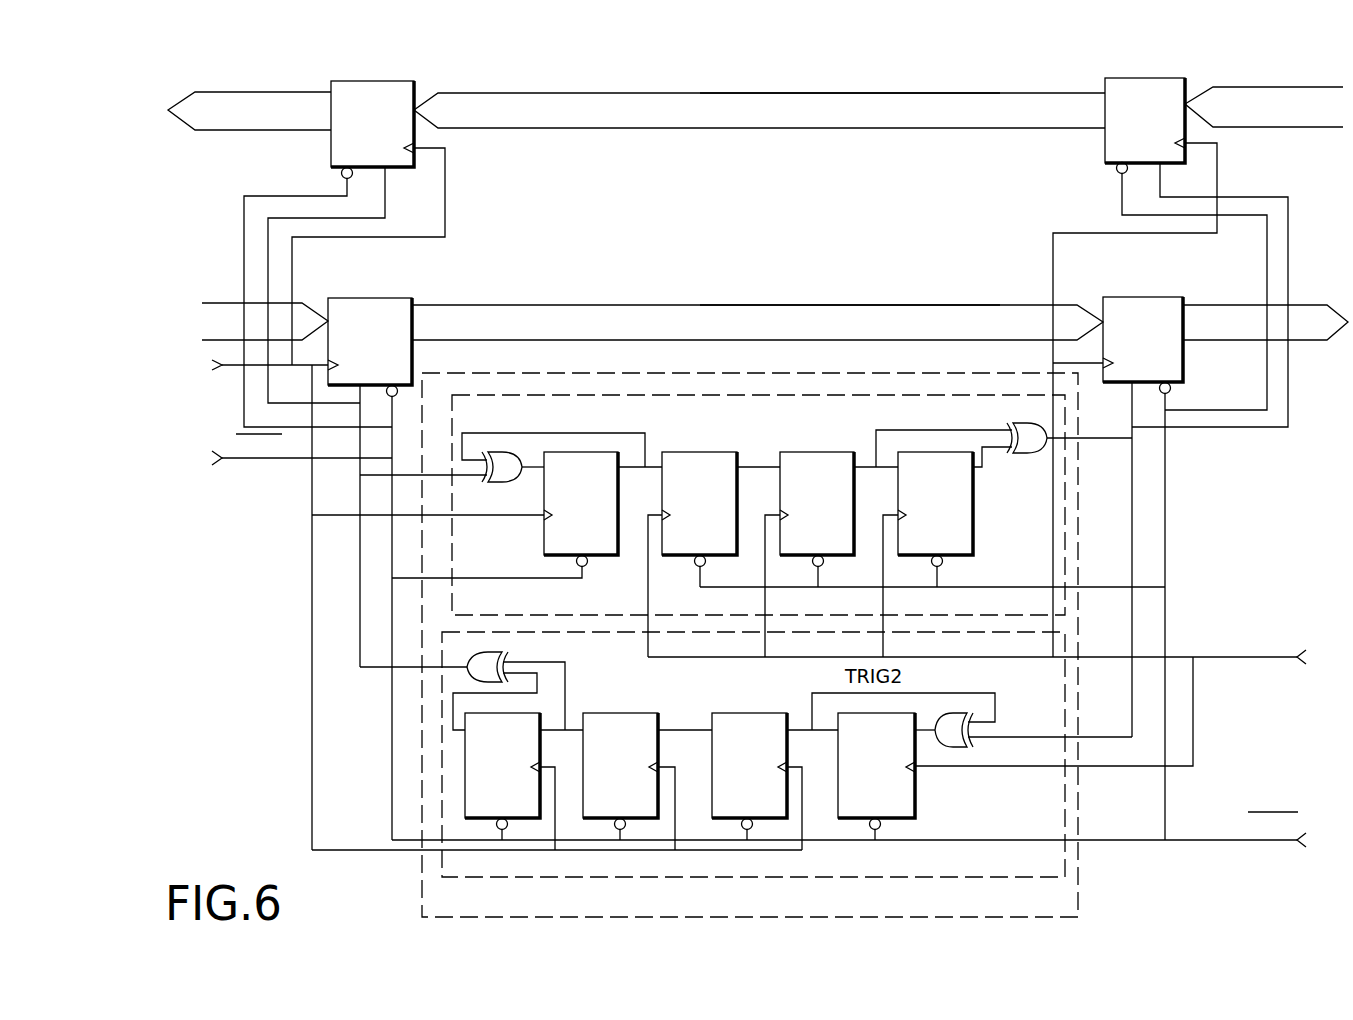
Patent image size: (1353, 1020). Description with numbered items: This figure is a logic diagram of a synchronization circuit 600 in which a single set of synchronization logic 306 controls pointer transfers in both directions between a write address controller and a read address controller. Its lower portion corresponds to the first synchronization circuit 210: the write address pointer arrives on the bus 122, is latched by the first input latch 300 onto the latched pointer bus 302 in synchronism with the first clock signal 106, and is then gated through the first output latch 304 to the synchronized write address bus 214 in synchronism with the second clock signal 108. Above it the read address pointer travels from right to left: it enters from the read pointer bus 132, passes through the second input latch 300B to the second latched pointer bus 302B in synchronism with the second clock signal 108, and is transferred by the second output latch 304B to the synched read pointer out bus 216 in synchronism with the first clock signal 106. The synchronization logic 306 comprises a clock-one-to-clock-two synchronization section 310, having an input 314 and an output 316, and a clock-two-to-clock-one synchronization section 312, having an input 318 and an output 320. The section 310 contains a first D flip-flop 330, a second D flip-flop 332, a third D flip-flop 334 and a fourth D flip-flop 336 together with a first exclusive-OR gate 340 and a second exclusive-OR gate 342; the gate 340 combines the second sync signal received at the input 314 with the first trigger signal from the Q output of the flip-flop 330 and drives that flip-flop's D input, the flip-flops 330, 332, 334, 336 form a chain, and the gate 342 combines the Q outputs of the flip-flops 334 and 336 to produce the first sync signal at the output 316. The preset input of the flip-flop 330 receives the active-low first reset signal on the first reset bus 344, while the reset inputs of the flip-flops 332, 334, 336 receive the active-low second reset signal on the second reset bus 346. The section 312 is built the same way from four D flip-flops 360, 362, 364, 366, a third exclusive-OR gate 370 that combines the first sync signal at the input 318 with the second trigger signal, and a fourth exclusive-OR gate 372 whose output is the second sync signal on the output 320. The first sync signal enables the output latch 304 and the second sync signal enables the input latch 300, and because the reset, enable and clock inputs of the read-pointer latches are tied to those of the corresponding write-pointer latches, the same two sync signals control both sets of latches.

The first clock signal CLOCK1 106 is at (233, 372).
The second clock signal CLOCK2 108 is at (1217, 660).
The bus 122 is at (236, 303).
The read pointer bus 132 is at (1232, 87).
The first synchronization circuit 210 is at (878, 287).
The synchronized write address bus 214 is at (1210, 305).
The synched read pointer out bus 216 is at (248, 90).
The input latch 300 is at (345, 298).
The second input latch 300B is at (1120, 77).
The latched pointer bus 302 is at (745, 305).
The second latched pointer bus 302B is at (755, 92).
The output latch 304 is at (1110, 297).
The second output latch 304B is at (367, 81).
The synchronization logic 306 is at (760, 373).
The clock1-to-clock2 synchronization section 310 is at (1067, 573).
The clock2-to-clock1 synchronization section 312 is at (440, 633).
The input 314 is at (452, 475).
The output 316 is at (1067, 445).
The input 318 is at (1065, 738).
The output 320 is at (440, 668).
The first D flip-flop 330 is at (598, 560).
The second D flip-flop 332 is at (700, 452).
The third D flip-flop 334 is at (800, 452).
The fourth D flip-flop 336 is at (973, 538).
The first two-input exclusive-OR gate 340 is at (502, 484).
The second two-input exclusive-OR gate 342 is at (1020, 455).
The first reset bus 344 is at (243, 467).
The second reset bus 346 is at (1217, 842).
The flip-flop 360 is at (915, 795).
The flip-flop 362 is at (745, 712).
The flip-flop 364 is at (625, 712).
The flip-flop 366 is at (525, 712).
The third two-input exclusive-OR gate 370 is at (955, 712).
The fourth two-input exclusive-OR gate 372 is at (500, 652).
The synchronization circuit 600 is at (926, 87).